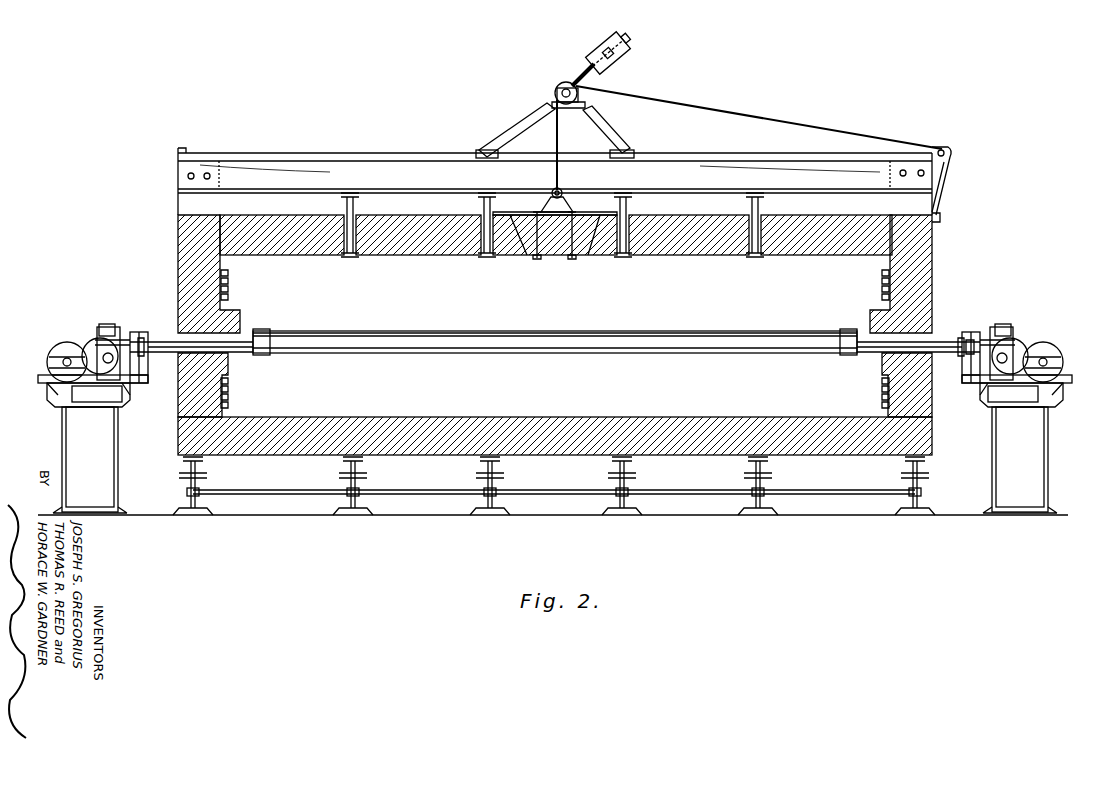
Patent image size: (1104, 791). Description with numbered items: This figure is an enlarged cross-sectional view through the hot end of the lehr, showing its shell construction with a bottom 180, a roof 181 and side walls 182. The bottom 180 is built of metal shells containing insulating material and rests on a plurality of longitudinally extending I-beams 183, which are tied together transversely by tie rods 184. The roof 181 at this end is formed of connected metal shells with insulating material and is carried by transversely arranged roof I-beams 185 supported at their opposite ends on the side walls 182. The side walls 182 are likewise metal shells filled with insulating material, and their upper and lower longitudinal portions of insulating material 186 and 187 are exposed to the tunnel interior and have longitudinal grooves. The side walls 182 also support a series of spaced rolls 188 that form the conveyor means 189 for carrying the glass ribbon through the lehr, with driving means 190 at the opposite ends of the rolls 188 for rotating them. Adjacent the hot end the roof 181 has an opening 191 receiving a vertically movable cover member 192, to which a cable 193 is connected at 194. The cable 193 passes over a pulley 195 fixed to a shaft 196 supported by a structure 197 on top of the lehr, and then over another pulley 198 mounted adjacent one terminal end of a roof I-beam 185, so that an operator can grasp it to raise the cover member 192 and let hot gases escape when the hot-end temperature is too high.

The bottom 180 is at (730, 416).
The roof 181 is at (710, 257).
The side walls 182 is at (177, 290).
The I-beams 183 is at (622, 512).
The tie rods 184 is at (700, 490).
The roof I-beams 185 is at (721, 163).
The upper portion of insulating material 186 is at (229, 284).
The lower portion of insulating material 187 is at (225, 391).
The rolls 188 is at (447, 332).
The conveyor means 189 is at (641, 326).
The driving means 190 is at (95, 328).
The opening 191 is at (576, 250).
The cover member 192 is at (542, 258).
The cable 193 is at (556, 151).
The cable connection 194 is at (562, 190).
The pulley 195 is at (560, 88).
The shaft 196 is at (567, 85).
The structure 197 is at (617, 122).
The pulley 198 is at (950, 155).